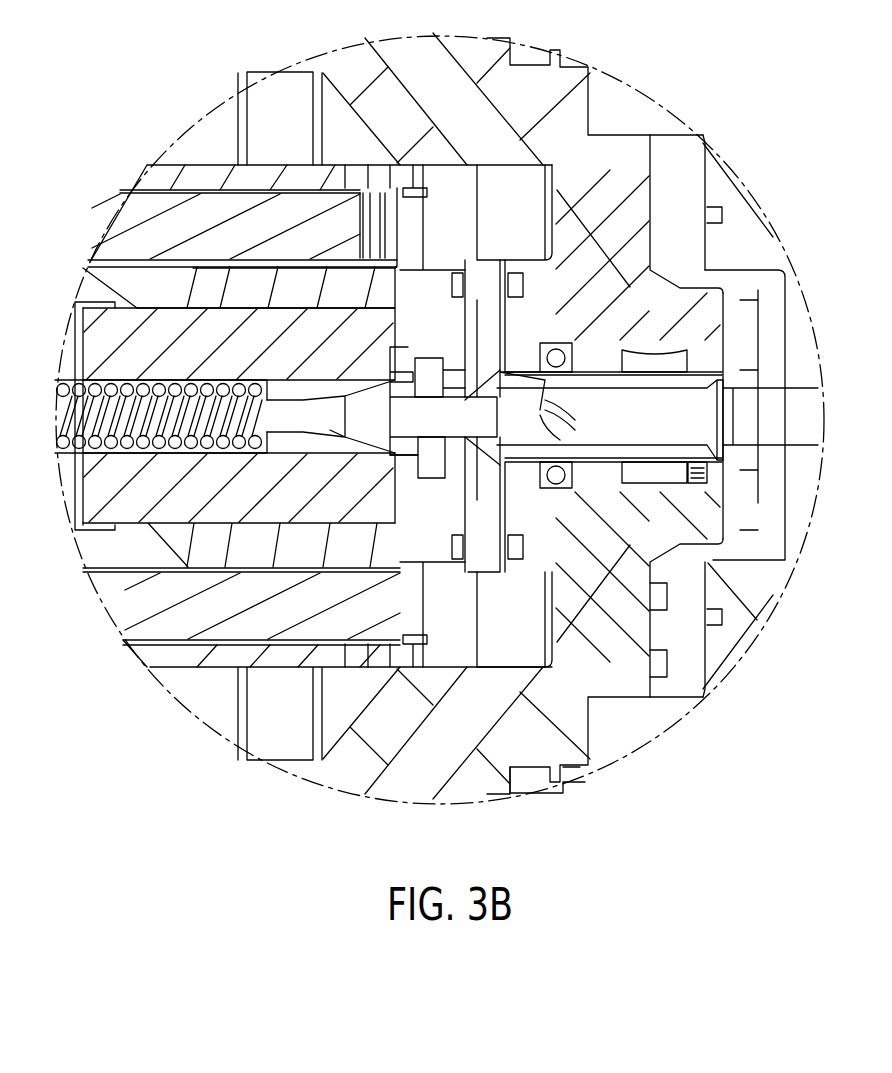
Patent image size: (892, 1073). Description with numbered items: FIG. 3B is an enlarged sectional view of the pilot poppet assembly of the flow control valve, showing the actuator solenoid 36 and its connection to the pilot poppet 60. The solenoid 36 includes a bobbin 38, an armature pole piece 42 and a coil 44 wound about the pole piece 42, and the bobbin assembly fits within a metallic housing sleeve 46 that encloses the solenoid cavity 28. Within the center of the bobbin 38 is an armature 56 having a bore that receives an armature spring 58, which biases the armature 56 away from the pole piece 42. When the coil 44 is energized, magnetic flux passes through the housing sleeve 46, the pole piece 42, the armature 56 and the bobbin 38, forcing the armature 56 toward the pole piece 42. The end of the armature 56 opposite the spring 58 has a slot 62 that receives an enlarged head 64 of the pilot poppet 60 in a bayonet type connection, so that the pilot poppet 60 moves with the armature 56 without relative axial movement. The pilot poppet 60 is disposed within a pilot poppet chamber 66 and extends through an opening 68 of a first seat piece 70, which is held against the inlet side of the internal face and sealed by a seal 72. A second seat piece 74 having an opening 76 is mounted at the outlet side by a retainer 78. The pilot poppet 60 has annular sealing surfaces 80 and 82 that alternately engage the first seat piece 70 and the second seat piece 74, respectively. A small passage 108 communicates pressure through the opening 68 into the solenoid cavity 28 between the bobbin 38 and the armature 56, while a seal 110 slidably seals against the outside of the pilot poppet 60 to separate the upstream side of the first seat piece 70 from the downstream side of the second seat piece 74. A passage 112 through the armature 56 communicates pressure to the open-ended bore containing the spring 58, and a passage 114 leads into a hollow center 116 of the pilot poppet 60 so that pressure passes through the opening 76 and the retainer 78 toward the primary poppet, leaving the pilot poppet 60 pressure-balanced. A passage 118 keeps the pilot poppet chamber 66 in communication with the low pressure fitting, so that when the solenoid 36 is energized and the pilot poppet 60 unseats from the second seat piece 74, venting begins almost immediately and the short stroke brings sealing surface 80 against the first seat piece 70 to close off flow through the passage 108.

The solenoid cavity 28 is at (547, 163).
The actuator solenoid 36 is at (88, 292).
The bobbin 38 is at (405, 416).
The armature pole piece 42 is at (63, 470).
The coil 44 is at (241, 427).
The housing sleeve 46 is at (218, 177).
The armature 56 is at (239, 415).
The armature spring 58 is at (60, 372).
The pilot poppet 60 is at (614, 466).
The slot 62 is at (398, 357).
The enlarged head 64 is at (405, 440).
The pilot poppet chamber 66 is at (657, 477).
The opening 68 is at (460, 380).
The first seat piece 70 is at (495, 287).
The seal 72 is at (510, 335).
The second seat piece 74 is at (753, 330).
The opening 76 is at (743, 390).
The retainer 78 is at (768, 287).
The annular sealing surface 80 is at (495, 462).
The annular sealing surface 82 is at (733, 378).
The small passage 108 is at (513, 770).
The seal 110 is at (573, 362).
The passage 112 is at (333, 453).
The passage 114 is at (548, 423).
The hollow center 116 is at (610, 420).
The passage 118 is at (638, 416).